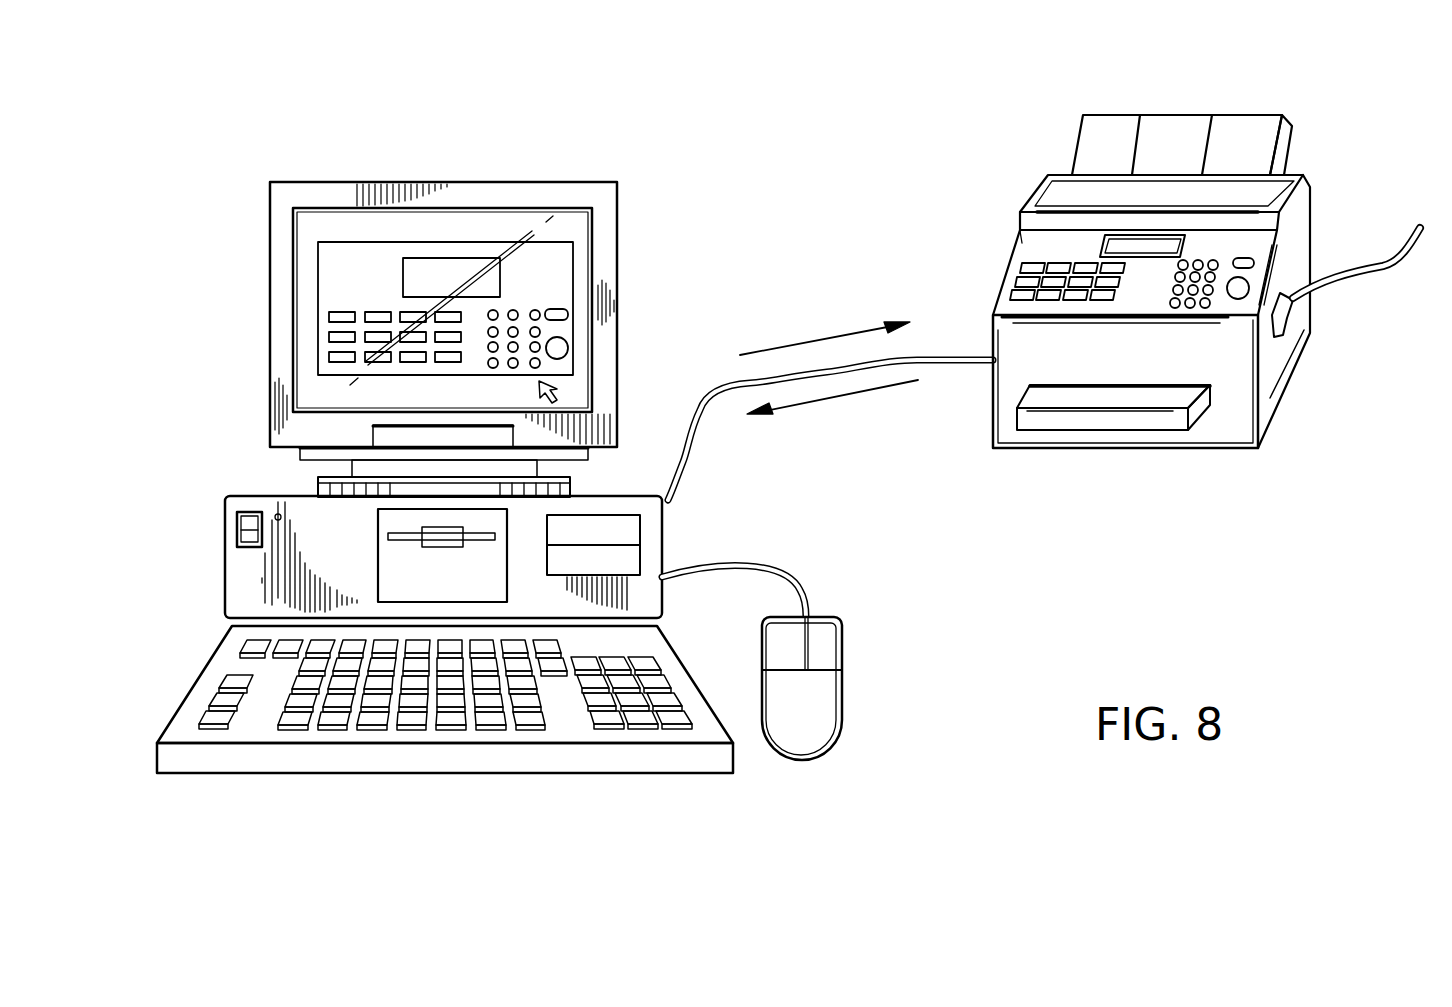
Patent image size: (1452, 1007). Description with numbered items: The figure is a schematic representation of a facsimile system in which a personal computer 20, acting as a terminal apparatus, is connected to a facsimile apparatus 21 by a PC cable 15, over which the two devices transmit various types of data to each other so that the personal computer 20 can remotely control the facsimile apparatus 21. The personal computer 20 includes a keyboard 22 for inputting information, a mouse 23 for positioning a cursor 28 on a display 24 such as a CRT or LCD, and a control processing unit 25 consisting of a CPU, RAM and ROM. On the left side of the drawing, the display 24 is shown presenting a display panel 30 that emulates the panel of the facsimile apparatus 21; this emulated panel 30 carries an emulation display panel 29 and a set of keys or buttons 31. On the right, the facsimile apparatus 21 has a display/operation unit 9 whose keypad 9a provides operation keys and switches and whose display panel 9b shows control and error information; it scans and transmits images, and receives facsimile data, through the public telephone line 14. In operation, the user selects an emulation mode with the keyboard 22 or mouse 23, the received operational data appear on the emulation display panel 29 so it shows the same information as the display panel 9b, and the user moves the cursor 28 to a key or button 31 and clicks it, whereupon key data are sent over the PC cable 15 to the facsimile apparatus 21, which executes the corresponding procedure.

The personal computer 20 is at (452, 176).
The display 24 is at (620, 239).
The display panel 30 is at (317, 273).
The emulation display panel 29 is at (462, 262).
The key or button 31 is at (493, 368).
The cursor 28 is at (558, 387).
The control processing unit 25 is at (224, 537).
The keyboard 22 is at (158, 772).
The mouse 23 is at (826, 717).
The PC cable 15 is at (933, 362).
The facsimile apparatus 21 is at (1058, 165).
The display/operation unit 9 is at (1020, 243).
The display panel 9b is at (1173, 238).
The keypad 9a is at (1178, 308).
The public telephone line 14 is at (1360, 282).